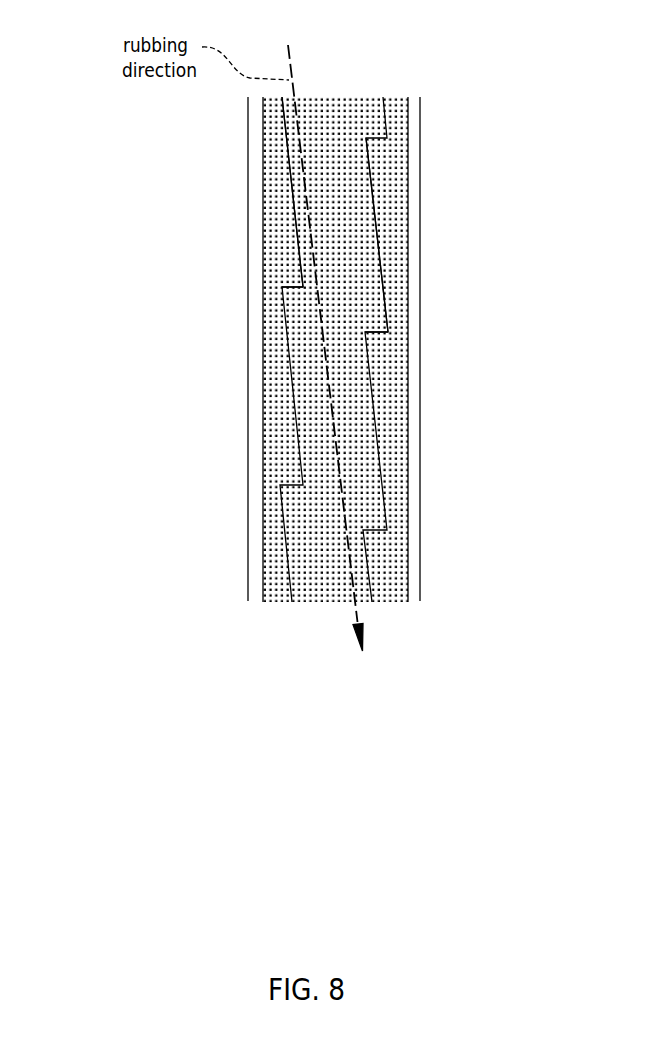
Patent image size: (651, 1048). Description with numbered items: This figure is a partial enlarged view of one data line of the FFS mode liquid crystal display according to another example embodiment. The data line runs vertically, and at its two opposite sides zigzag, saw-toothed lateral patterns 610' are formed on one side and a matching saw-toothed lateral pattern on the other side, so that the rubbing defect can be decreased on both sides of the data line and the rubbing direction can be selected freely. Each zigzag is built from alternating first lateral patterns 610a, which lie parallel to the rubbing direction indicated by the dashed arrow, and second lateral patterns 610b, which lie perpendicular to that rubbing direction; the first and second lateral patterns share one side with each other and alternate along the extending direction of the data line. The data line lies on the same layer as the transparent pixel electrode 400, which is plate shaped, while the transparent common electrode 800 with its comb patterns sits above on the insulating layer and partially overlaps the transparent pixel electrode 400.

The transparent pixel electrode 400 is at (420, 410).
The transparent common electrode 800 is at (409, 503).
The saw-toothed lateral pattern 610' is at (480, 349).
The first lateral pattern 610a is at (293, 195).
The second lateral pattern 610b is at (287, 288).